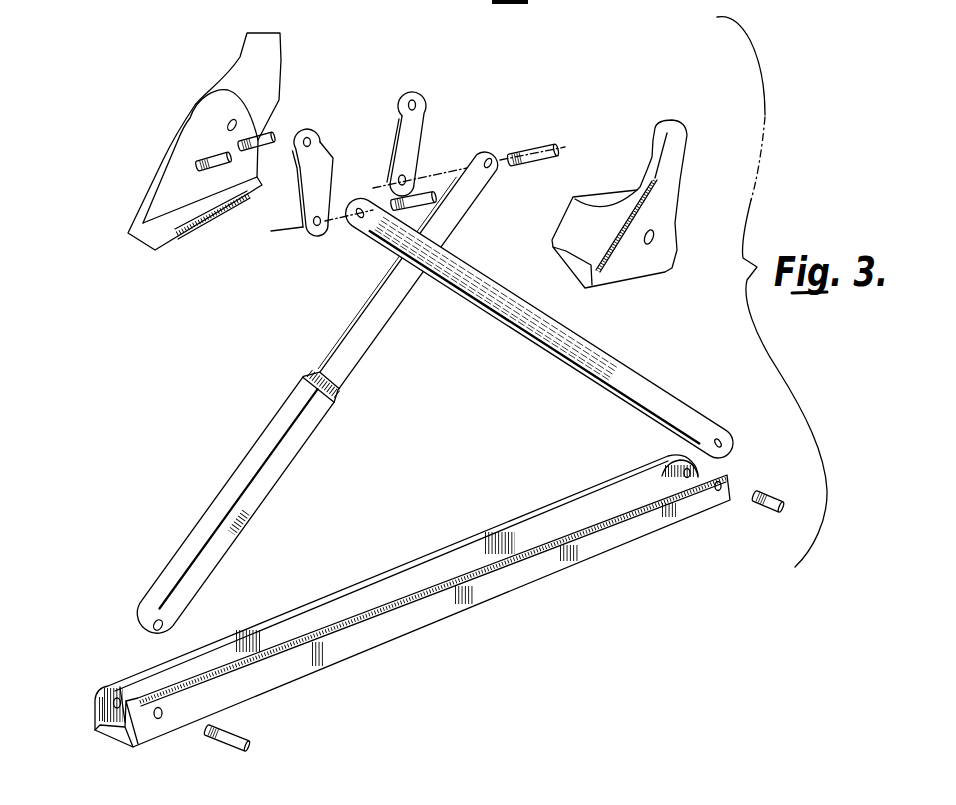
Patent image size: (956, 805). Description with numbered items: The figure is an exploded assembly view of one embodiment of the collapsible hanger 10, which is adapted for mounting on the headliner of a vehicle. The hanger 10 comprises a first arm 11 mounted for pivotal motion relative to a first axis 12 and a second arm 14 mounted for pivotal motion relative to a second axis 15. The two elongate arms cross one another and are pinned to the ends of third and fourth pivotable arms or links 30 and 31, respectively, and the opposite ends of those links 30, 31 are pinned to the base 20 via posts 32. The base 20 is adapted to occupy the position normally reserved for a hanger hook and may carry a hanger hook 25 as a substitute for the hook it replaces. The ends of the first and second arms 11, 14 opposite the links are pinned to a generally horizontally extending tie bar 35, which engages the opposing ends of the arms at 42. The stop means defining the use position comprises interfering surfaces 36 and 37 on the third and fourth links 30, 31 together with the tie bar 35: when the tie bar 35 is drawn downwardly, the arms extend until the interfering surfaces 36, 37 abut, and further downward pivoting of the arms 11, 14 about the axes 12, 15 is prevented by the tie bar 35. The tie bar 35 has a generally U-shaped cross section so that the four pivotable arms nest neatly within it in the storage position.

The collapsible hanger 10 is at (271, 320).
The first arm 11 is at (263, 443).
The first axis 12 is at (271, 231).
The second arm 14 is at (567, 343).
The second axis 15 is at (593, 141).
The base 20 is at (263, 34).
The hanger hook 25 is at (680, 148).
The third arm or link 30 is at (320, 148).
The fourth arm or link 31 is at (408, 132).
The posts 32 is at (237, 137).
The tie bar 35 is at (428, 560).
The interfering surface 36 is at (333, 172).
The interfering surface 37 is at (391, 138).
The engagement points of tie bar with arms 42 is at (123, 690).